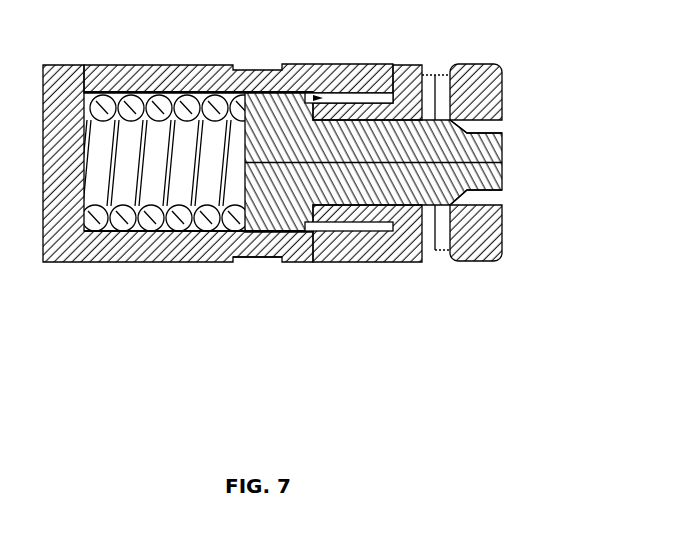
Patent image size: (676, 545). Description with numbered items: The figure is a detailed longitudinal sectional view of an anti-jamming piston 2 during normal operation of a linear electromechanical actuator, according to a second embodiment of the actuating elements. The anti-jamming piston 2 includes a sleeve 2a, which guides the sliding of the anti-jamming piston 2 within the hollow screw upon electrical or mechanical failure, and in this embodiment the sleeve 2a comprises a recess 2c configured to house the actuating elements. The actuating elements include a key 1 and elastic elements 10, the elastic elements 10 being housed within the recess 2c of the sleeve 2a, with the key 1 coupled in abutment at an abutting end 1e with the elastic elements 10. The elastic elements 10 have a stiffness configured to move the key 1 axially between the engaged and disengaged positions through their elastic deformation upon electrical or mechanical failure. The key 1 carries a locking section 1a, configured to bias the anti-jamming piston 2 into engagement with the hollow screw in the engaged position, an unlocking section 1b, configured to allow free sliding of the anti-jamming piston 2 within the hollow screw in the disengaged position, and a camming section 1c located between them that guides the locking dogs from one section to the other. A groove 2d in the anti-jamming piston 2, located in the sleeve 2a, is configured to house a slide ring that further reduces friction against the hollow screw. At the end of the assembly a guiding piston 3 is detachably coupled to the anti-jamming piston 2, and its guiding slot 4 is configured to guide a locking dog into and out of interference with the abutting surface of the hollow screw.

The key 1 is at (397, 163).
The locking section 1a is at (335, 207).
The unlocking section 1b is at (487, 192).
The camming section 1c is at (463, 130).
The abutting end 1e is at (283, 115).
The anti-jamming piston 2 is at (232, 163).
The sleeve 2a is at (72, 83).
The recess 2c is at (205, 94).
The groove 2d is at (245, 258).
The guiding piston 3 is at (460, 70).
The guiding slot 4 is at (450, 88).
The elastic elements 10 is at (138, 218).